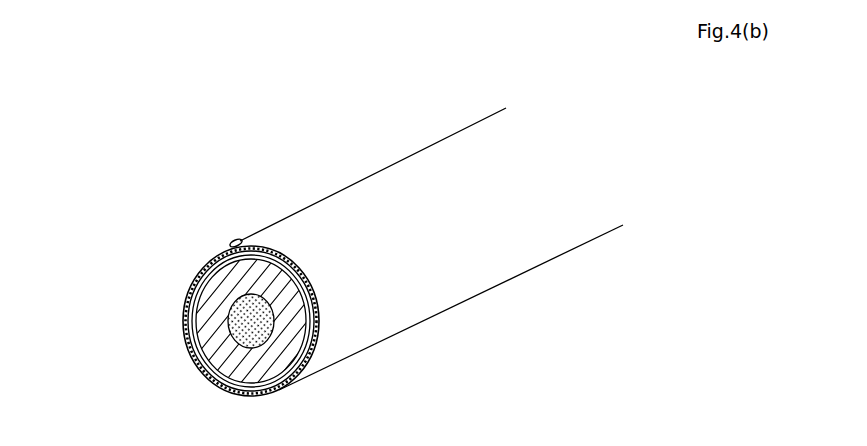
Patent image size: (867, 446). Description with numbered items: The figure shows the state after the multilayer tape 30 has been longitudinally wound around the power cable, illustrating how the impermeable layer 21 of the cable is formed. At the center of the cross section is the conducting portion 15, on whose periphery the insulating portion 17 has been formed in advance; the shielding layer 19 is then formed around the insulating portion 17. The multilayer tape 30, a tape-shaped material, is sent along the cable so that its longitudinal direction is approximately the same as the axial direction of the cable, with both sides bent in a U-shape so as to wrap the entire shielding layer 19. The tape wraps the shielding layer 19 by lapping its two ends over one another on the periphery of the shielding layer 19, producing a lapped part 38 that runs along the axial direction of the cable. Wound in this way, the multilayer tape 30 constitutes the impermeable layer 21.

The conducting portion 15 is at (236, 341).
The insulating portion 17 is at (192, 309).
The shielding layer 19 is at (210, 257).
The impermeable layer 21 is at (317, 357).
The multilayer tape 30 is at (378, 325).
The lapped part 38 is at (234, 241).